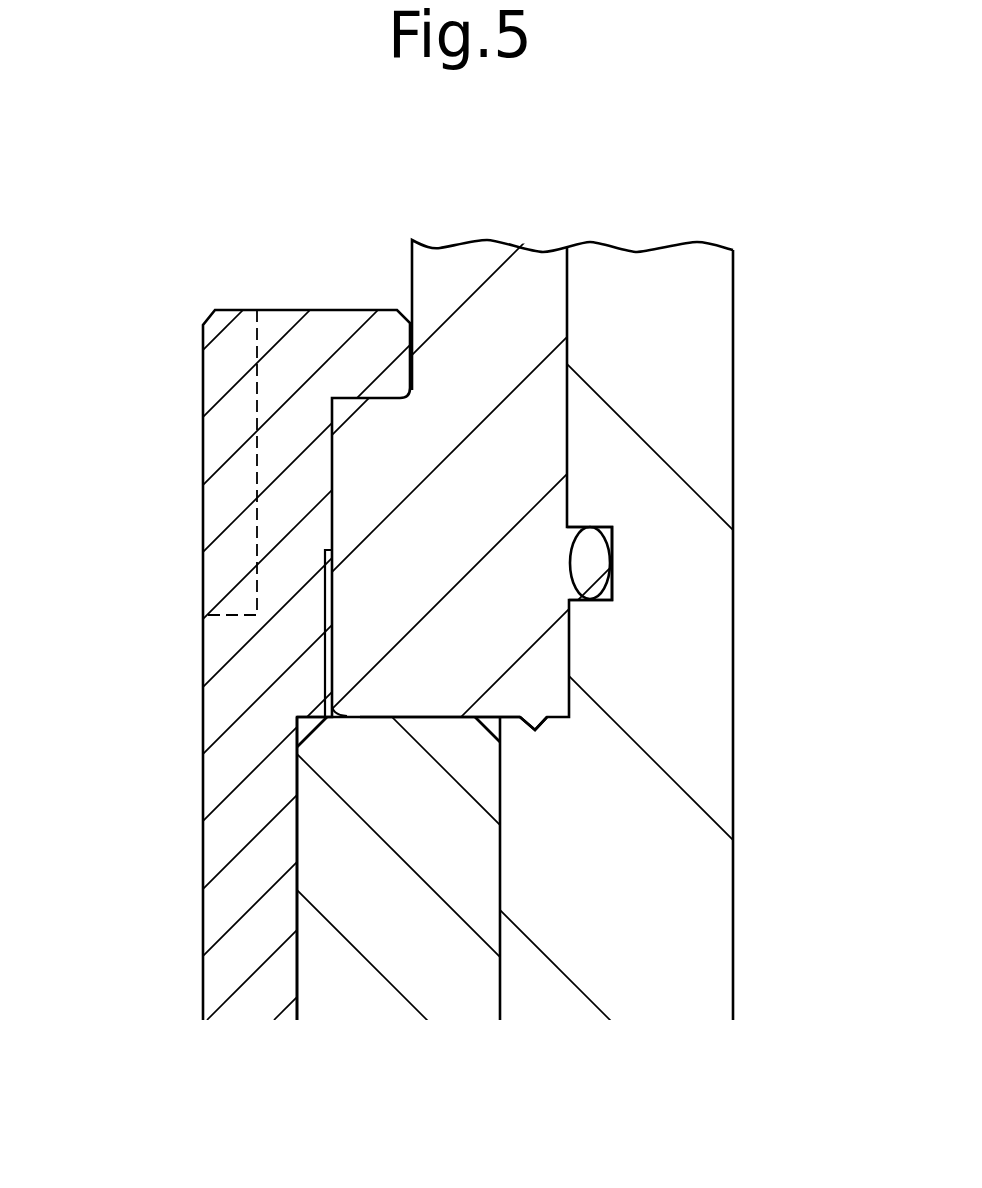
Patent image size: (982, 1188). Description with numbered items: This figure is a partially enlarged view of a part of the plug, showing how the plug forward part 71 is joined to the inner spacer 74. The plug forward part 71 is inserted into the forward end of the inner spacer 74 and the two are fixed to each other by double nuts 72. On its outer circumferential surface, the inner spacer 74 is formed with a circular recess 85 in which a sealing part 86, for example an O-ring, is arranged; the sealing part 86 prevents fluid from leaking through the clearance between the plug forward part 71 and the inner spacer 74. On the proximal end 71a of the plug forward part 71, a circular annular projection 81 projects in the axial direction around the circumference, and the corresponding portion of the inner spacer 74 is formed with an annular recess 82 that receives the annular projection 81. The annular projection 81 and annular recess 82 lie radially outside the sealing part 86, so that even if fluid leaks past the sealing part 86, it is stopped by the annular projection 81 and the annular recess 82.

The plug forward part 71 is at (492, 262).
The proximal end of the plug forward part 71a is at (447, 717).
The double nuts 72 is at (307, 326).
The inner spacer 74 is at (657, 280).
The annular projection 81 is at (533, 715).
The annular recess 82 is at (543, 733).
The circular recess 85 is at (600, 523).
The sealing part 86 is at (597, 563).